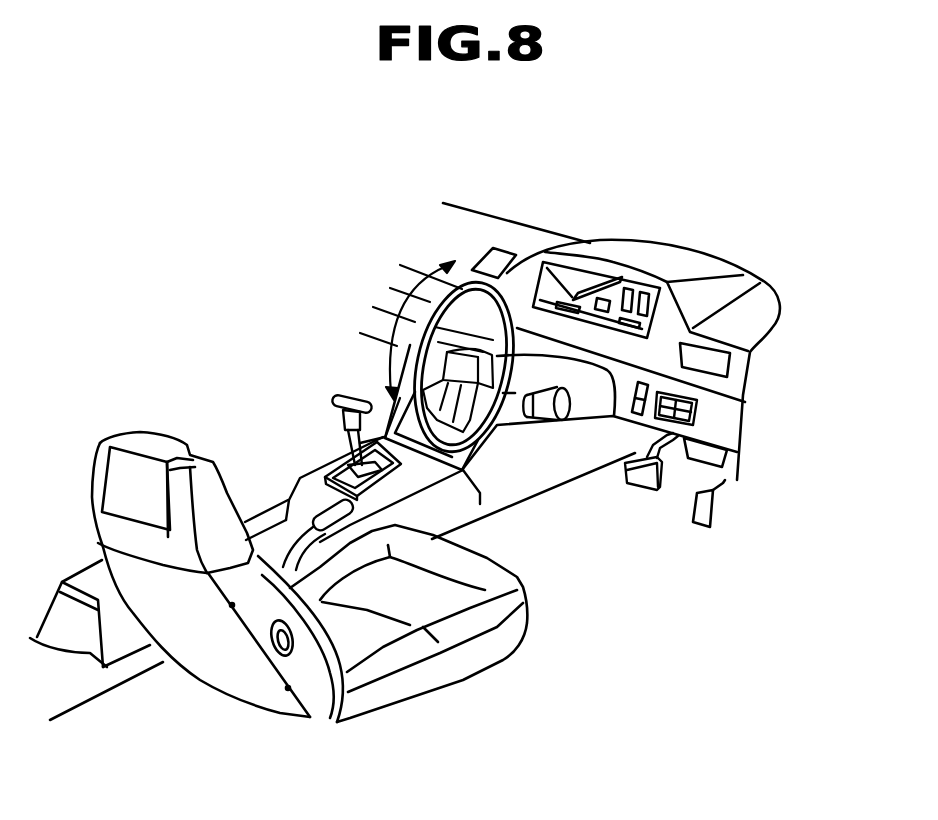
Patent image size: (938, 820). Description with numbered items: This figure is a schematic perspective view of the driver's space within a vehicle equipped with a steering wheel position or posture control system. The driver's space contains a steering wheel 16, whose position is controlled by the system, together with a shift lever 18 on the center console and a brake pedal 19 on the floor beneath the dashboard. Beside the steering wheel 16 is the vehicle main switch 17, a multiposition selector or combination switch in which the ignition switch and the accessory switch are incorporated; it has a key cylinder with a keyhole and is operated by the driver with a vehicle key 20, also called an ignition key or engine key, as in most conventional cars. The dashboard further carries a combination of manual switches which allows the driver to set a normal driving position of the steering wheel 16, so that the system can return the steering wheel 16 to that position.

The steering wheel 16 is at (485, 423).
The vehicle main switch 17 is at (562, 410).
The shift lever 18 is at (346, 392).
The brake pedal 19 is at (650, 493).
The vehicle key 20 is at (533, 415).